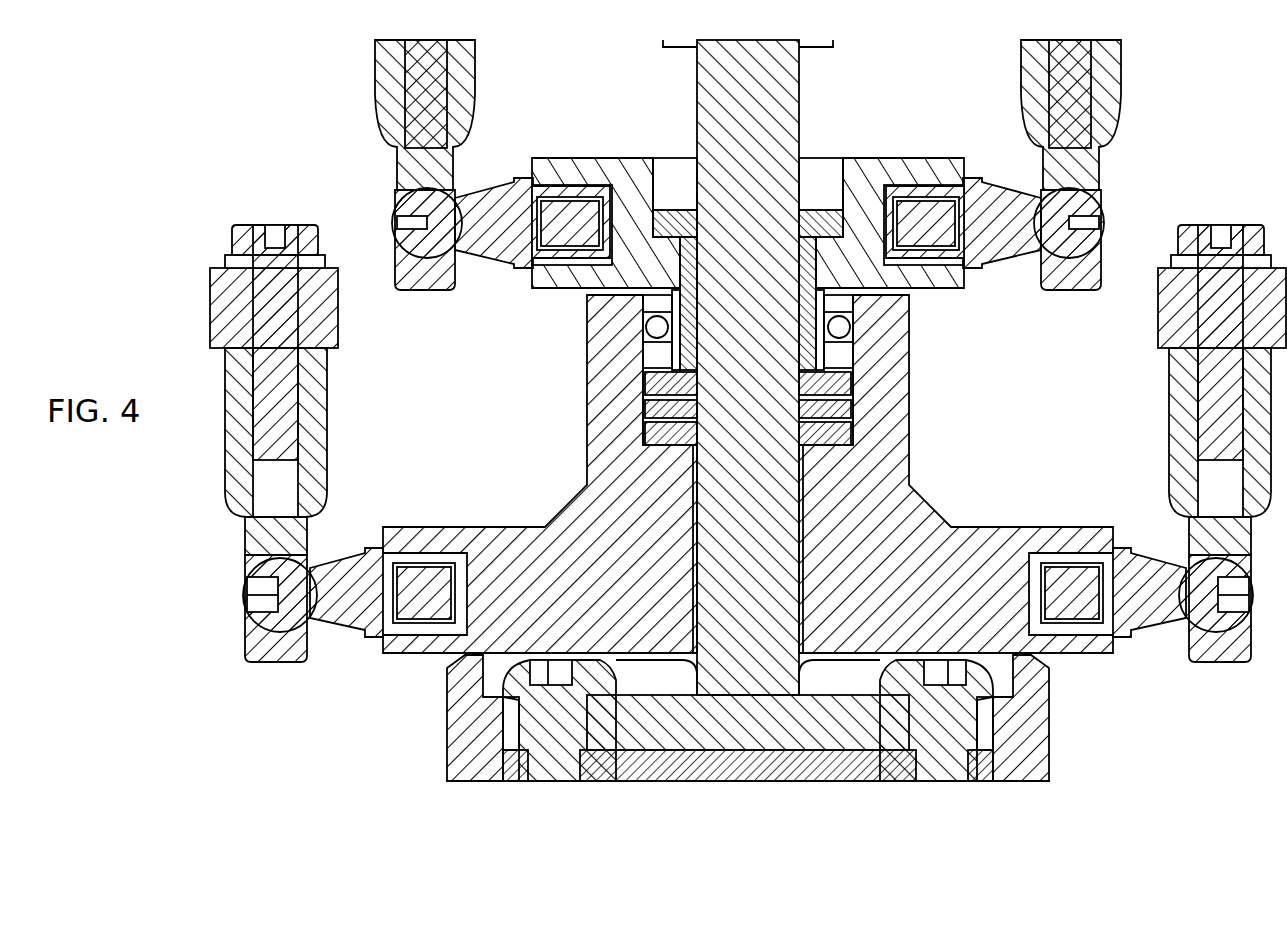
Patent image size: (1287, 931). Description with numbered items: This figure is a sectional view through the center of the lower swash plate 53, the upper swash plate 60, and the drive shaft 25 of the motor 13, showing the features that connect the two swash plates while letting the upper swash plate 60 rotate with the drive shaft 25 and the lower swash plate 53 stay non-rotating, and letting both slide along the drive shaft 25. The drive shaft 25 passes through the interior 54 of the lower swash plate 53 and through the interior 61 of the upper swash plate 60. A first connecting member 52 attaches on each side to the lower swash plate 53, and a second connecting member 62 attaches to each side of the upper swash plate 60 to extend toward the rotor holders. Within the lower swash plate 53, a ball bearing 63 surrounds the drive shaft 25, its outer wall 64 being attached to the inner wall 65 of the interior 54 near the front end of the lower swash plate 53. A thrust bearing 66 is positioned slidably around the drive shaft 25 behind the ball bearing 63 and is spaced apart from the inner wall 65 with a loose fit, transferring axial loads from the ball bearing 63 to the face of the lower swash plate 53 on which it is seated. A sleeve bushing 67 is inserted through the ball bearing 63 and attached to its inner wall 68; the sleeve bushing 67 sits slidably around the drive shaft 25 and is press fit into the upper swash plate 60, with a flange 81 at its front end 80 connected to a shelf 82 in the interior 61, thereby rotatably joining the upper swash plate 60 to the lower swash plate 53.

The motor 13 is at (860, 735).
The drive shaft 25 is at (731, 108).
The first connecting member 52 is at (322, 442).
The lower swash plate 53 is at (867, 585).
The interior of the lower swash plate 54 is at (648, 368).
The upper swash plate 60 is at (852, 158).
The interior of the upper swash plate 61 is at (680, 183).
The second connecting member 62 is at (480, 60).
The ball bearing 63 is at (848, 330).
The outer wall of the ball bearing 64 is at (842, 318).
The inner wall of the lower swash plate interior 65 is at (640, 336).
The thrust bearing 66 is at (848, 382).
The sleeve bushing 67 is at (690, 336).
The inner wall of the ball bearing 68 is at (678, 300).
The front end of the sleeve bushing 80 is at (807, 257).
The flange 81 is at (828, 215).
The shelf 82 is at (667, 243).